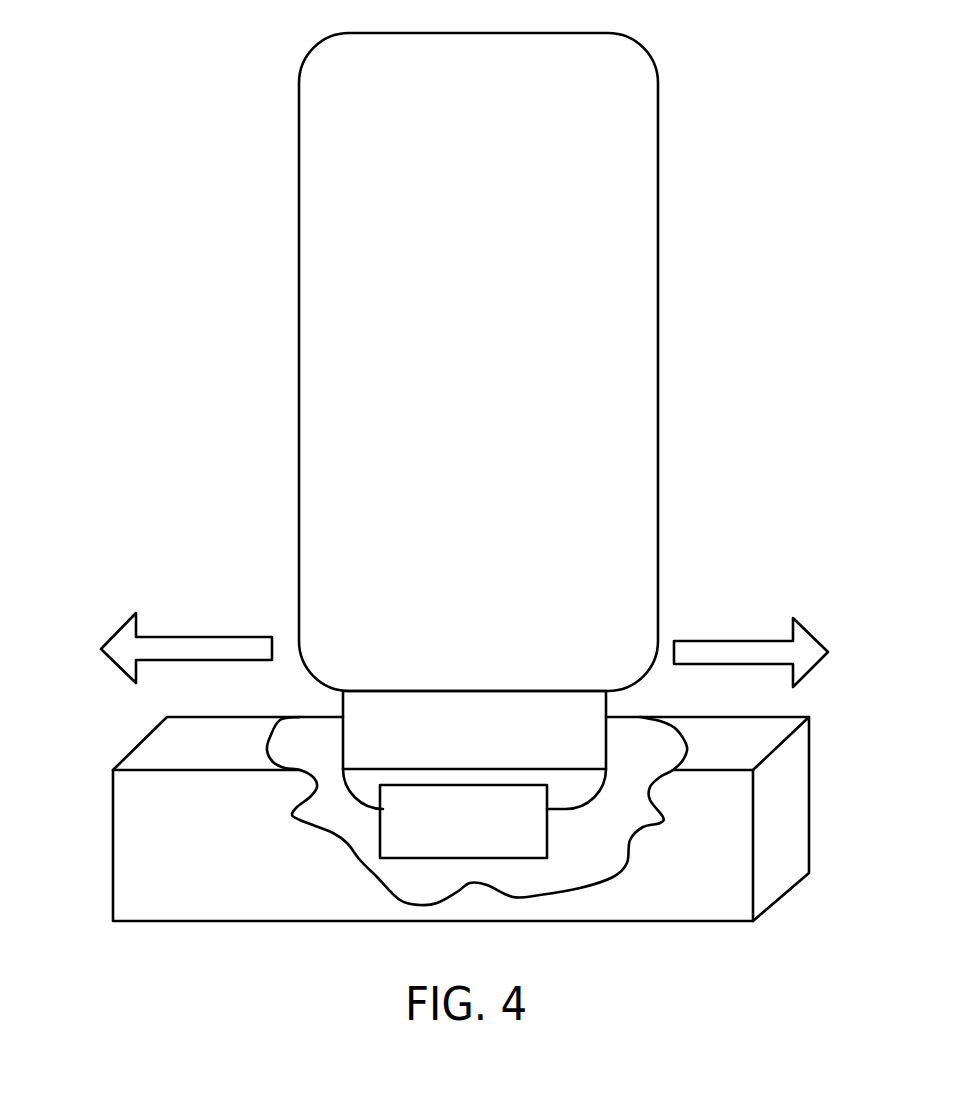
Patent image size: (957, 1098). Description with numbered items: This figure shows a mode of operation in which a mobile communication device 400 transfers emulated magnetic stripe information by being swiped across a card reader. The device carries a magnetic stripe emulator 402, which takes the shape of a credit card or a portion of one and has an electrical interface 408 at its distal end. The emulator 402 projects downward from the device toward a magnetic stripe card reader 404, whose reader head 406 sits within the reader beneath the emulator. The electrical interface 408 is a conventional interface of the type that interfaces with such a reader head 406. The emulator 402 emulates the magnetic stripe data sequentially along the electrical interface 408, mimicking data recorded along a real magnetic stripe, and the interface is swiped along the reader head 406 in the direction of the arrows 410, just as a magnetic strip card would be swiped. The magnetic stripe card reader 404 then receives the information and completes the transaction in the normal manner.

The mobile communication device 400 is at (464, 96).
The magnetic stripe emulator 402 is at (458, 749).
The magnetic stripe card reader 404 is at (157, 812).
The reader head 406 is at (446, 847).
The electrical interface 408 is at (567, 787).
The arrows 410 is at (118, 628).